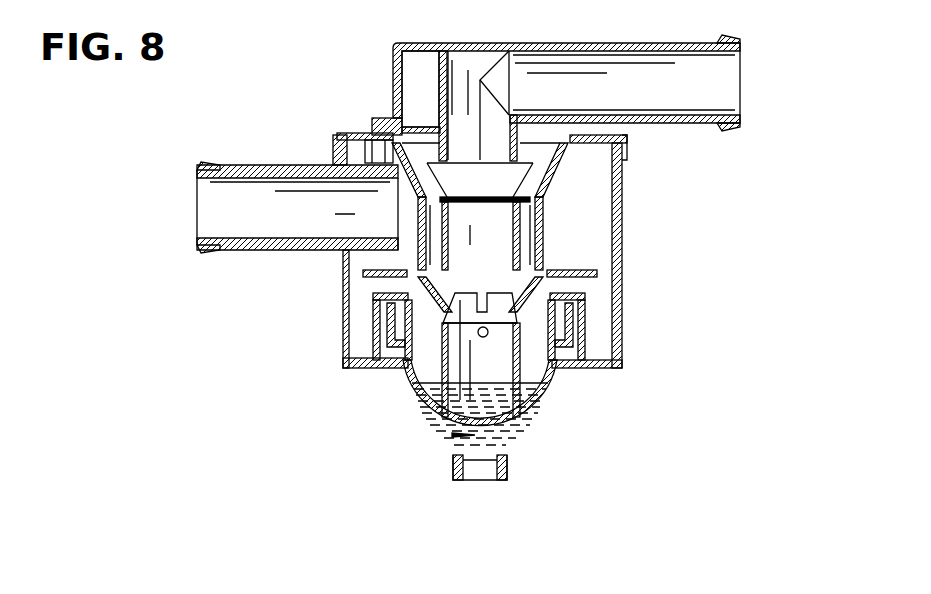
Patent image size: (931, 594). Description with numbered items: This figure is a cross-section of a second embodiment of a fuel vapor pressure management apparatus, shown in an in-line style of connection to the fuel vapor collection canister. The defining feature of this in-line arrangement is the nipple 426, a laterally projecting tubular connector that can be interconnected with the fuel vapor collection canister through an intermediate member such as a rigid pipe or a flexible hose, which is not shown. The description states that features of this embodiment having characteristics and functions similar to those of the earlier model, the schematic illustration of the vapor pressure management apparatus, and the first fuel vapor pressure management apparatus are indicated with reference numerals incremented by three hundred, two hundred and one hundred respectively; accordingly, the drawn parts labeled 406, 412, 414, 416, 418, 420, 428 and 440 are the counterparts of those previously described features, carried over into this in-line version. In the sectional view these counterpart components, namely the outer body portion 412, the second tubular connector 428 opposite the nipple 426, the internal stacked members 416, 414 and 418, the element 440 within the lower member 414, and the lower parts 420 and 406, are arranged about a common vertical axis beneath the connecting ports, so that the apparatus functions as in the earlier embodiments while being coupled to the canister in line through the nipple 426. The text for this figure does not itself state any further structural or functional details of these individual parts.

The reservoir bowl 406 is at (517, 430).
The housing 412 is at (620, 333).
The valve body 414 is at (448, 336).
The inner cup 416 is at (520, 220).
The seal rings 418 is at (375, 342).
The fluid 420 is at (452, 436).
The nipple 426 is at (207, 238).
The outlet pipe 428 is at (722, 50).
The orifice 440 is at (488, 336).